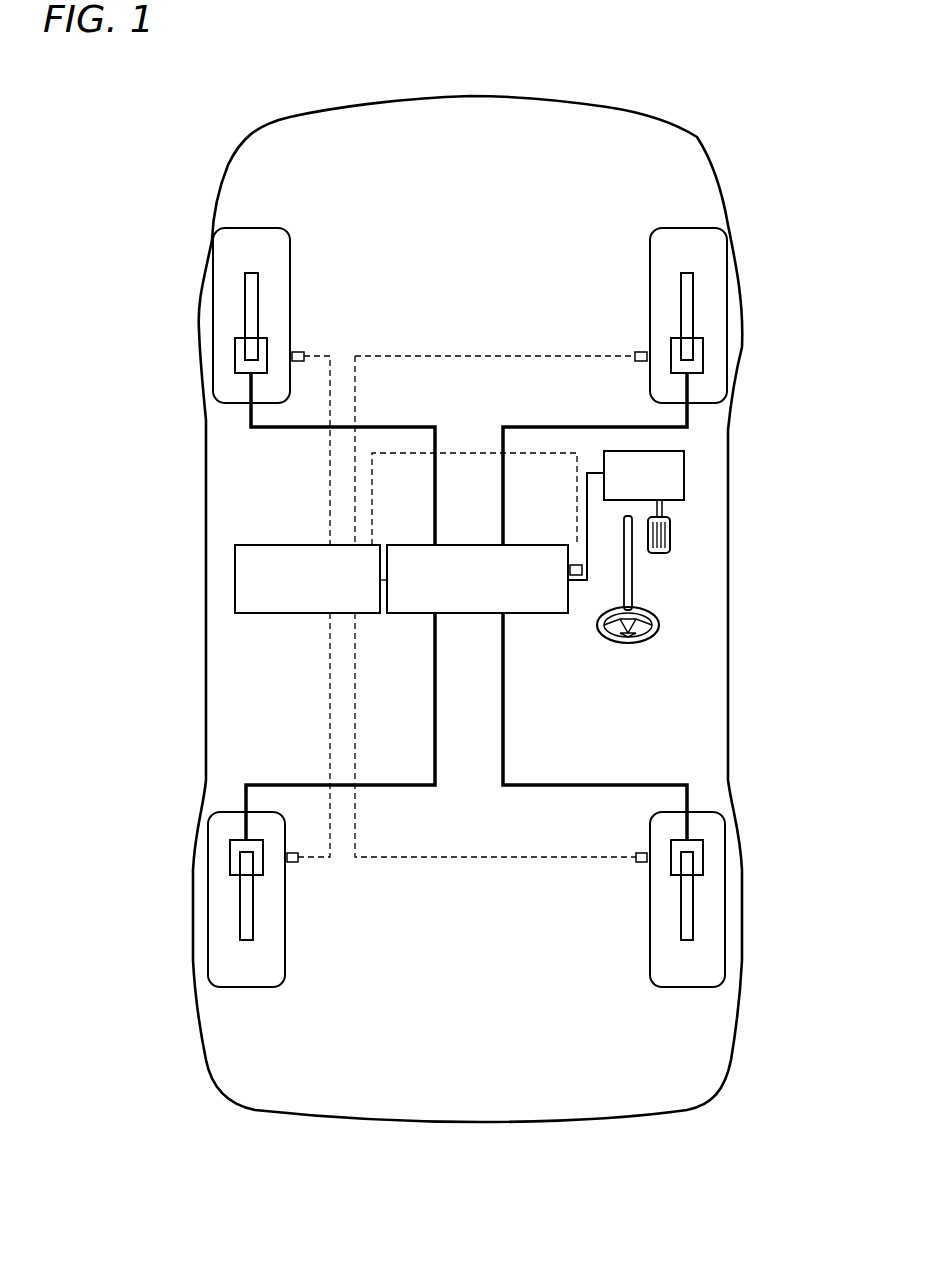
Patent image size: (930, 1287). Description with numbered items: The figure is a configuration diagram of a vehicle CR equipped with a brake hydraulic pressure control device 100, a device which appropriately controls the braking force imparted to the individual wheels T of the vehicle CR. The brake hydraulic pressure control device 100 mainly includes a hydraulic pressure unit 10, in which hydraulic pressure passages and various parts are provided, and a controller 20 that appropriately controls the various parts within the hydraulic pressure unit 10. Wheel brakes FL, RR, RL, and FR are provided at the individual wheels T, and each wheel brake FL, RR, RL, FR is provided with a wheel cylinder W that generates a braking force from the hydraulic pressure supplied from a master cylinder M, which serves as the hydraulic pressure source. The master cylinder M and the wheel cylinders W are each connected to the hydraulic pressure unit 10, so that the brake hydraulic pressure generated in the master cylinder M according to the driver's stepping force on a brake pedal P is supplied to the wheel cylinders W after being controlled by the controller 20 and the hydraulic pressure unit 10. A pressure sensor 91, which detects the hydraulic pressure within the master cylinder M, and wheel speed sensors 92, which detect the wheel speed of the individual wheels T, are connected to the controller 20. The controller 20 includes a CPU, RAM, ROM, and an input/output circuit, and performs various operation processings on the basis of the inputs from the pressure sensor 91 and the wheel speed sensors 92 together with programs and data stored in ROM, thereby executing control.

The vehicle CR is at (607, 108).
The brake hydraulic pressure control device 100 is at (224, 546).
The wheel T is at (213, 279).
The wheel brake FL is at (245, 310).
The wheel brake FR is at (693, 310).
The wheel brake RL is at (240, 898).
The wheel brake RR is at (693, 897).
The wheel cylinder W is at (235, 355).
The wheel speed sensor 92 is at (297, 350).
The controller 20 is at (290, 615).
The hydraulic pressure unit 10 is at (525, 615).
The master cylinder M is at (684, 482).
The brake pedal P is at (672, 543).
The pressure sensor 91 is at (582, 572).